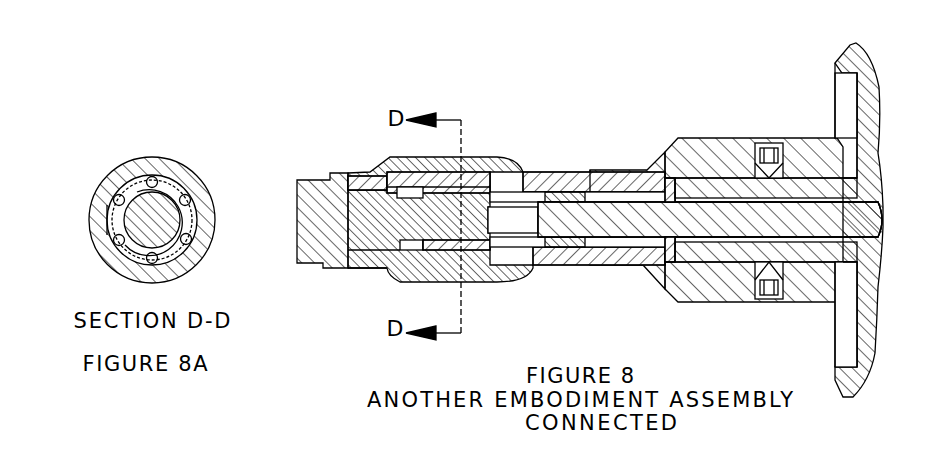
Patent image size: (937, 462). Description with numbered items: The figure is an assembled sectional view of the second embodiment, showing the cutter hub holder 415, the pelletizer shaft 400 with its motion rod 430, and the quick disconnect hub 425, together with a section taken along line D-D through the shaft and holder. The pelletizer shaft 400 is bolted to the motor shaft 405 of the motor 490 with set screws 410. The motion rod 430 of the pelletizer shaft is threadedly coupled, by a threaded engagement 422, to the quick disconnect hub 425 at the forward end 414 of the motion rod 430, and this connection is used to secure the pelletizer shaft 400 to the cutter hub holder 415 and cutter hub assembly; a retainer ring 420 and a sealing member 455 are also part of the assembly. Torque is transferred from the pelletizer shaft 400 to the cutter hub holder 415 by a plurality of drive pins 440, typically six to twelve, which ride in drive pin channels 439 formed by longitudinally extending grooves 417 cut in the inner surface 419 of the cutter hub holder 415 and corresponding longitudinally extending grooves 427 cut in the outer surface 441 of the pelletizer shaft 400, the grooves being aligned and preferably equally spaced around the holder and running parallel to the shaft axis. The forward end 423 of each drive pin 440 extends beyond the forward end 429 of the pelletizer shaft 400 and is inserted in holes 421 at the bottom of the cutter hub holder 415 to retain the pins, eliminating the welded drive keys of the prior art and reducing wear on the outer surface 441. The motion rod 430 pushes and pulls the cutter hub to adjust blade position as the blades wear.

In FIG. 8, the pelletizer shaft 400 is at (586, 162).
In FIG. 8A, the pelletizer shaft 400 is at (166, 168).
In FIG. 8, the motor shaft 405 is at (813, 170).
In FIG. 8, the set screws 410 is at (769, 140).
In FIG. 8, the forward end of the motion rod 414 is at (538, 162).
In FIG. 8, the cutter hub holder 415 is at (442, 152).
In FIG. 8A, the cutter hub holder 415 is at (119, 166).
In FIG. 8A, the longitudinally extending grooves 417 is at (113, 198).
In FIG. 8A, the inner surface 419 is at (102, 217).
In FIG. 8, the retainer ring 420 is at (380, 236).
In FIG. 8, the holes 421 is at (374, 267).
In FIG. 8, the threaded engagement 422 is at (563, 190).
In FIG. 8, the forward end of the drive pins 423 is at (381, 271).
In FIG. 8, the quick disconnect hub 425 is at (356, 182).
In FIG. 8A, the quick disconnect hub 425 is at (172, 190).
In FIG. 8A, the longitudinally extending grooves 427 is at (187, 243).
In FIG. 8, the forward end of the pelletizer shaft 429 is at (419, 253).
In FIG. 8, the motion rod 430 is at (657, 190).
In FIG. 8A, the drive pin channels 439 is at (152, 175).
In FIG. 8, the drive pins 440 is at (485, 171).
In FIG. 8A, the drive pins 440 is at (111, 243).
In FIG. 8, the outer surface 441 is at (513, 220).
In FIG. 8A, the outer surface 441 is at (199, 217).
In FIG. 8, the sealing member 455 is at (535, 206).
In FIG. 8, the motor 490 is at (835, 61).